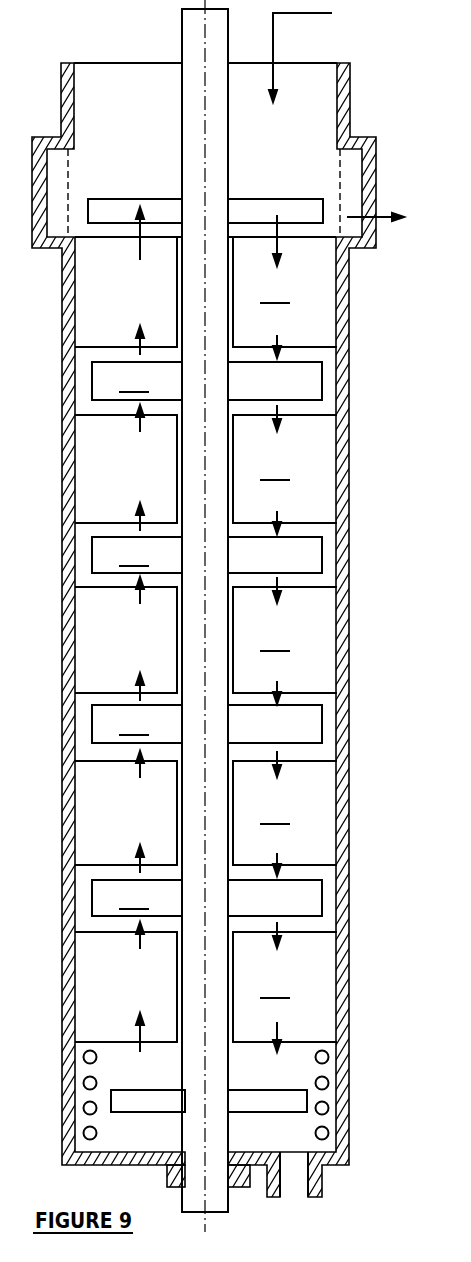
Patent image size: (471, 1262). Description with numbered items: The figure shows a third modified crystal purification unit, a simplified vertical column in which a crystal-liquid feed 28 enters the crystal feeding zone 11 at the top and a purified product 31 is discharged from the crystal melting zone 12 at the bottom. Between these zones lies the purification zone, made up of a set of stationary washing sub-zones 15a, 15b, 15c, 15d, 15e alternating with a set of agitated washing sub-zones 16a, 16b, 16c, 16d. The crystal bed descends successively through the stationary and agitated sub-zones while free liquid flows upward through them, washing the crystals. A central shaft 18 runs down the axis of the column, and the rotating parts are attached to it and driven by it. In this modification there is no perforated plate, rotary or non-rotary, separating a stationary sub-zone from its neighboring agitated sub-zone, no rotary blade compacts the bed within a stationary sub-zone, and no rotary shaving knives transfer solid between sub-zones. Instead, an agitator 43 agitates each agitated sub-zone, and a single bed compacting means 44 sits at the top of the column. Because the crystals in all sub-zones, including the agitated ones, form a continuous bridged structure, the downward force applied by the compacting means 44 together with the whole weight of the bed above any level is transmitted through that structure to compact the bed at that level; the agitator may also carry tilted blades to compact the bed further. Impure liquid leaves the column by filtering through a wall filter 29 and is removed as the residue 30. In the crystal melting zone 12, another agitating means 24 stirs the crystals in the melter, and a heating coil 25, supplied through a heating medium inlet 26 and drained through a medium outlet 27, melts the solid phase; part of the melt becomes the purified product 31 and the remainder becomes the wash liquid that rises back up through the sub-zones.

The crystal feeding zone 11 is at (277, 145).
The crystal melting zone 12 is at (289, 1138).
The stationary washing sub-zone A-1 15a is at (327, 288).
The stationary washing sub-zone A-2 15b is at (328, 463).
The stationary washing sub-zone A-3 15c is at (328, 632).
The stationary washing sub-zone A-4 15d is at (328, 802).
The stationary washing sub-zone A-5 15e is at (328, 982).
The agitated washing sub-zone B-1 16a is at (330, 375).
The agitated washing sub-zone B-2 16b is at (330, 550).
The agitated washing sub-zone B-3 16c is at (330, 718).
The agitated washing sub-zone B-4 16d is at (330, 888).
The central shaft 18 is at (187, 23).
The agitating means 24 is at (148, 1112).
The heating coil 25 is at (84, 1082).
The nozzle 26 is at (78, 1058).
The medium outlet 27 is at (329, 1133).
The crystal-liquid feed 28 is at (314, 53).
The wall filter 29 is at (340, 178).
The residue 30 is at (378, 207).
The purified product 31 is at (295, 1148).
The agitator 43 is at (98, 383).
The bed compacting means 44 is at (95, 209).